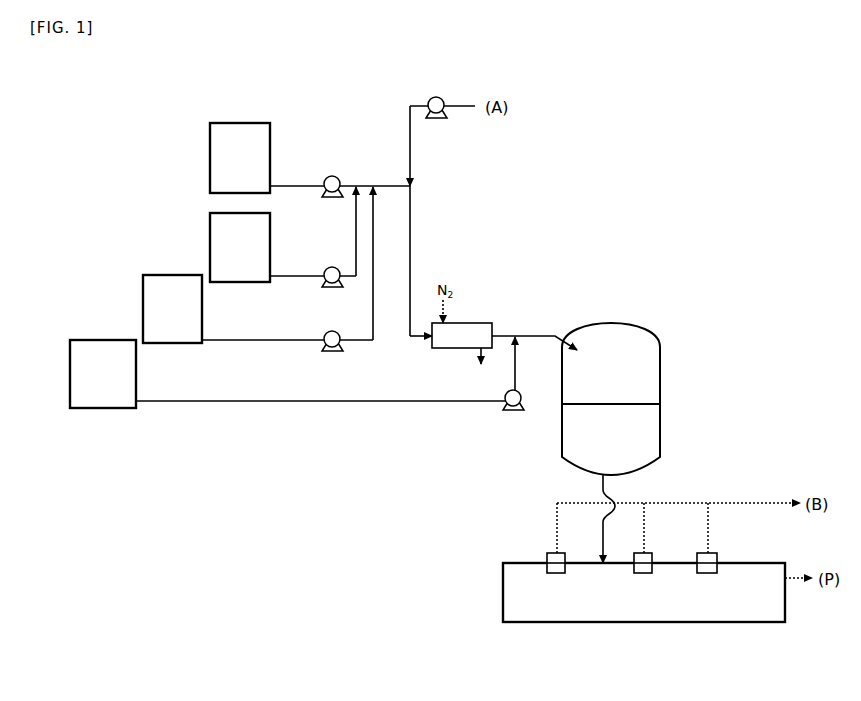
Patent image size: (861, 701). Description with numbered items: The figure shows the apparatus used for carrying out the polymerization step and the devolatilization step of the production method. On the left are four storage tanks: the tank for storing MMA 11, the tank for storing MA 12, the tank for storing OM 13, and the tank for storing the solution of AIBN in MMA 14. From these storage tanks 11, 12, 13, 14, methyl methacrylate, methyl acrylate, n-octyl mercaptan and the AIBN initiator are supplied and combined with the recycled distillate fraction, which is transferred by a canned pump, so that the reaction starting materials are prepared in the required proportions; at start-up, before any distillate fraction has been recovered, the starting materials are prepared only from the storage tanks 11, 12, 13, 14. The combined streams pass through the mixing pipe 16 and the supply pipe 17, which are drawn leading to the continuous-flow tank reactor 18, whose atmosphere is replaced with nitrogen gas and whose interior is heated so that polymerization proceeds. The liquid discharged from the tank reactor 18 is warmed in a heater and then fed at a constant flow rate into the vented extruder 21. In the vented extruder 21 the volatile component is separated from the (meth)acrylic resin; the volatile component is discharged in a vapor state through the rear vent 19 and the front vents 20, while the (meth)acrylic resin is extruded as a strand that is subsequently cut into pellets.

The tank for storing MMA 11 is at (209, 131).
The tank for storing MA 12 is at (209, 228).
The tank for storing OM 13 is at (143, 291).
The tank for storing solution of AIBN in MMA 14 is at (70, 363).
The mixing pipe 16 is at (411, 253).
The supply pipe 17 is at (538, 334).
The tank reactor 18 is at (658, 315).
The rear vent 19 is at (547, 561).
The front vents 20 is at (708, 567).
The vented extruder 21 is at (539, 656).